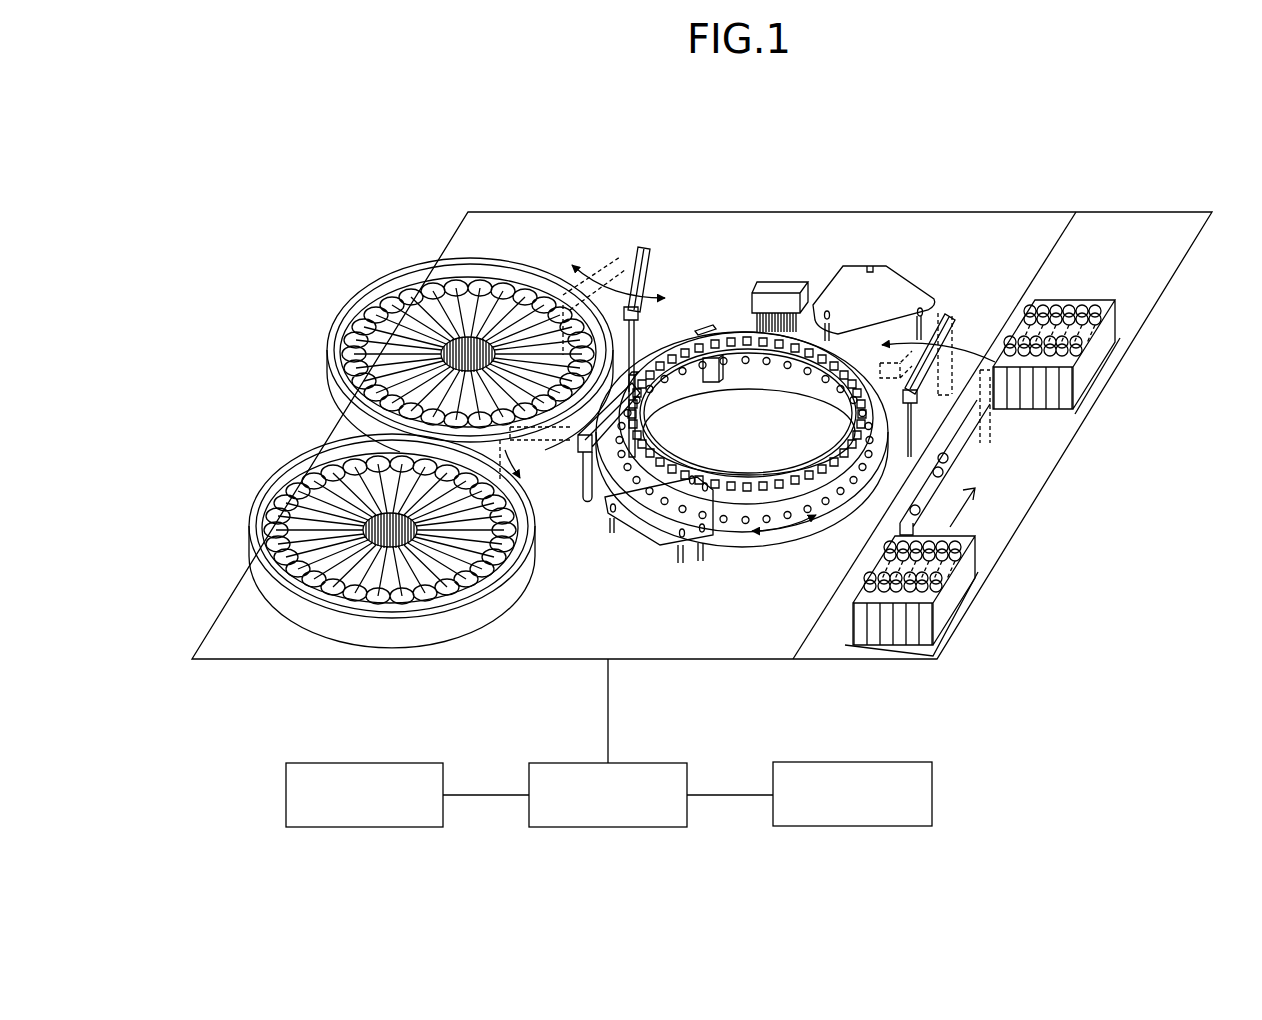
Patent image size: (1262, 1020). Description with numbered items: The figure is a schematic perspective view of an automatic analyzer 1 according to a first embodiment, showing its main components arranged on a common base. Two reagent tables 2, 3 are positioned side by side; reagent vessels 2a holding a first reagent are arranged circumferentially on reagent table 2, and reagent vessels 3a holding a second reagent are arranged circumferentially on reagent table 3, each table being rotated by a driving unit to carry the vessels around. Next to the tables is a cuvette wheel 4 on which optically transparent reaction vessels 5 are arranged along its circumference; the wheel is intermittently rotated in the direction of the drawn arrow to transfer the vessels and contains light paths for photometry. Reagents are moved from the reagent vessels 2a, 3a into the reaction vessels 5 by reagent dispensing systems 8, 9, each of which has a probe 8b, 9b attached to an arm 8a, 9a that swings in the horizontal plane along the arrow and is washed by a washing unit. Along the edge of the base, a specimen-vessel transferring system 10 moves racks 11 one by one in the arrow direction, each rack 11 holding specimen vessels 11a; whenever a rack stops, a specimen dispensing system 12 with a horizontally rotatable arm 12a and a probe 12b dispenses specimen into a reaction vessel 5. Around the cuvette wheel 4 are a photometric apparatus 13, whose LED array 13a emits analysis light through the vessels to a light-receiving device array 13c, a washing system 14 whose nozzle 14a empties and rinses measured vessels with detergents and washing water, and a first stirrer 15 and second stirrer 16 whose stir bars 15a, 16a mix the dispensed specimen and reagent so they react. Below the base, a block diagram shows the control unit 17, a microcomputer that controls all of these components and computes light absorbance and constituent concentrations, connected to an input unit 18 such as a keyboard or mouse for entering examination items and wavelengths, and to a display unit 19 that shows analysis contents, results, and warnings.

The automatic analyzer 1 is at (858, 167).
The reagent table 2 is at (352, 575).
The reagent vessels 2a is at (390, 586).
The reagent table 3 is at (429, 327).
The reagent vessels 3a is at (398, 328).
The cuvette wheel 4 is at (775, 551).
The reaction vessels 5 is at (857, 417).
The reagent dispensing system 8 is at (602, 469).
The arm 8a is at (580, 447).
The probe 8b is at (638, 414).
The reagent dispensing system 9 is at (626, 270).
The arm 9a is at (642, 270).
The probe 9b is at (638, 336).
The specimen-vessel transferring system 10 is at (1078, 443).
The rack 11 is at (1046, 483).
The specimen vessels 11a is at (1068, 353).
The specimen dispensing system 12 is at (941, 344).
The arm 12a is at (950, 313).
The probe 12b is at (915, 437).
The photometric apparatus 13 is at (723, 328).
The LED array 13a is at (700, 323).
The light-receiving device array 13c is at (718, 376).
The washing system 14 is at (802, 274).
The nozzle 14a is at (800, 321).
The first stirrer 15 is at (647, 556).
The stir bar 15a is at (700, 563).
The second stirrer 16 is at (874, 255).
The stir bar 16a is at (918, 318).
The control unit 17 is at (608, 828).
The input unit 18 is at (848, 828).
The display unit 19 is at (364, 828).